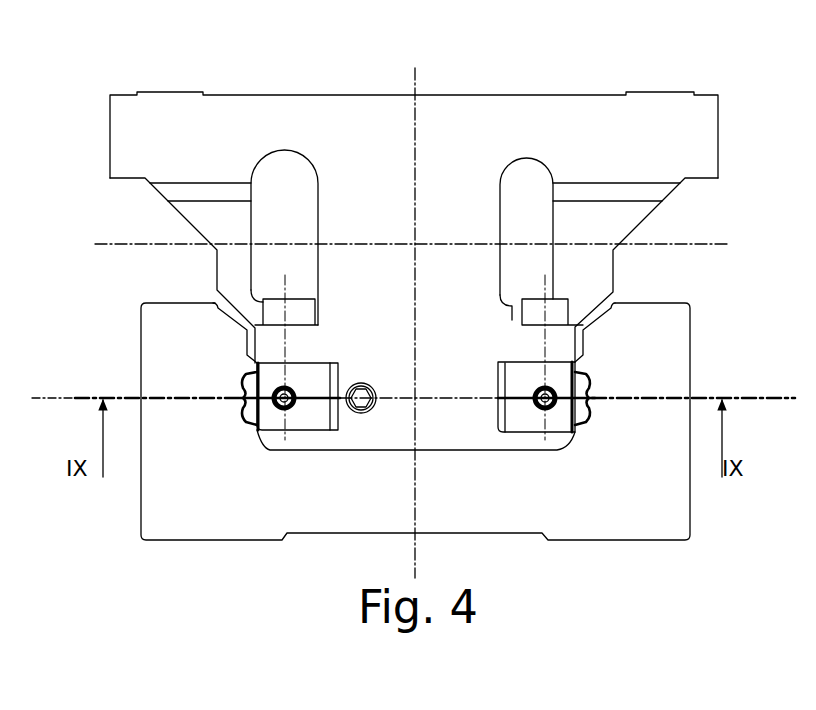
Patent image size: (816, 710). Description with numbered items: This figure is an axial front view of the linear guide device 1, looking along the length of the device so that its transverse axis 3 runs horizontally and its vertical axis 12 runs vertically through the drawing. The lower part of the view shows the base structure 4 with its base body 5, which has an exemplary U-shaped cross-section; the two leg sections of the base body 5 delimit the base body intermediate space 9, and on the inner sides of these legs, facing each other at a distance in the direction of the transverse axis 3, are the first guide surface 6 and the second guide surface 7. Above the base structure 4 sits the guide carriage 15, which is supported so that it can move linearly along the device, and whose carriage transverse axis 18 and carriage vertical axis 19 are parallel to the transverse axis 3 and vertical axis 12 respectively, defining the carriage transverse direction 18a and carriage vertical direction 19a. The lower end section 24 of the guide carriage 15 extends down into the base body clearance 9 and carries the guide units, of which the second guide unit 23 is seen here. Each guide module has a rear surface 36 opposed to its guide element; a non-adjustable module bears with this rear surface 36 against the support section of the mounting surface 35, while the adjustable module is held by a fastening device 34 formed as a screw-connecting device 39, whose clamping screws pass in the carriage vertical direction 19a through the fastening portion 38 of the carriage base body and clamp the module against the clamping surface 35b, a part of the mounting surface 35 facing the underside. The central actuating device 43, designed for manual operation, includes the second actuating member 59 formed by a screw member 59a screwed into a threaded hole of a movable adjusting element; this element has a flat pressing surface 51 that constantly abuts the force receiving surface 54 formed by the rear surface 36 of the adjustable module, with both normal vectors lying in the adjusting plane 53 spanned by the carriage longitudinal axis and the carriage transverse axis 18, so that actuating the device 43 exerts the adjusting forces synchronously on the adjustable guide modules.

The linear guide device 1 is at (565, 78).
The transverse axis 3 is at (760, 400).
The base structure 4 is at (664, 503).
The base body 5 is at (148, 338).
The first guide surface 6 is at (557, 408).
The second guide surface 7 is at (268, 449).
The base body intermediate space 9 is at (308, 441).
The vertical axis 12 is at (461, 313).
The carriage vertical axis 19 is at (461, 313).
The carriage vertical direction 19a is at (415, 78).
The guide carriage 15 is at (128, 88).
The carriage transverse axis 18 is at (399, 223).
The carriage transverse direction 18a is at (399, 223).
The second guide unit 23 is at (483, 437).
The lower end section 24 is at (440, 412).
The fastening device 34 is at (402, 295).
The screw-connecting device 39 is at (520, 291).
The mounting surface 35 is at (307, 333).
The clamping surface 35b is at (336, 350).
The rear surface 36 is at (461, 327).
The force receiving surface 54 is at (340, 372).
The fastening portion 38 is at (272, 343).
The central actuating device 43 is at (367, 415).
The pressing surface 51 is at (326, 410).
The adjusting plane 53 is at (44, 395).
The second actuating member 59 is at (414, 373).
The screw member 59a is at (374, 386).